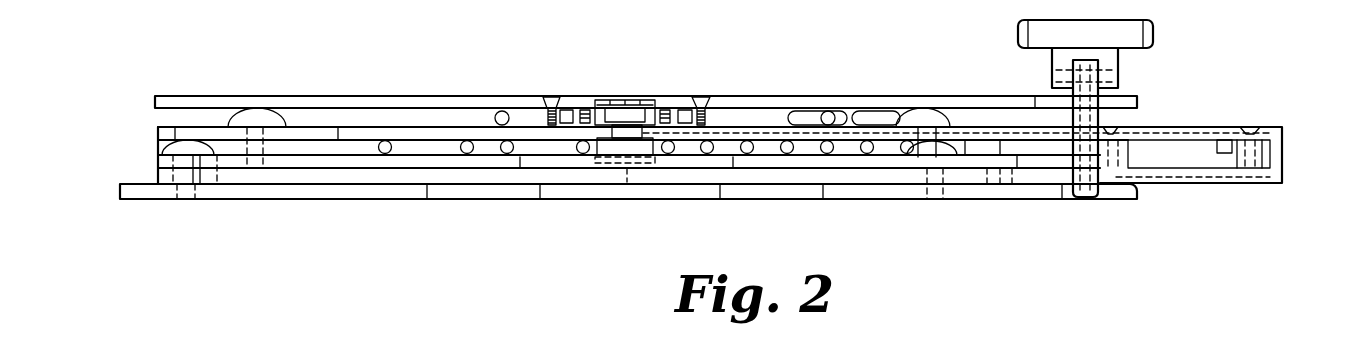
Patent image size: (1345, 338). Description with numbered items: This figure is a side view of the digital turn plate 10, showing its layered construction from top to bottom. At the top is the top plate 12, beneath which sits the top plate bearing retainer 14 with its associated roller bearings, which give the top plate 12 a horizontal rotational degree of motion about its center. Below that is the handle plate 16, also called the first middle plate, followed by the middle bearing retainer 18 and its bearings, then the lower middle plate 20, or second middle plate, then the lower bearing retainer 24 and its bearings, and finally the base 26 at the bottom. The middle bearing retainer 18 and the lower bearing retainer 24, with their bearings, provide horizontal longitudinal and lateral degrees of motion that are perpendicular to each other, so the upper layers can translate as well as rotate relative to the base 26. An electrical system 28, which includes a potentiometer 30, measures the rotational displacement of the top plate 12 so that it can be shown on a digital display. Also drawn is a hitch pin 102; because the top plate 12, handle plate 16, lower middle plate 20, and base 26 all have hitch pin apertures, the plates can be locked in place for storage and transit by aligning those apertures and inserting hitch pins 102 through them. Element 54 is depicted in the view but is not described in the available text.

The turn plate 10 is at (719, 168).
The top plate 12 is at (767, 96).
The top plate bearing retainer 14 is at (480, 120).
The handle plate 16 is at (158, 127).
The middle bearing retainer 18 is at (160, 148).
The lower middle plate 20 is at (160, 160).
The lower bearing retainer 24 is at (157, 173).
The base 26 is at (1138, 200).
The electrical system 28 is at (1232, 220).
The potentiometer 30 is at (633, 100).
The detent bump 54 is at (279, 119).
The hitch pin 102 is at (1018, 33).